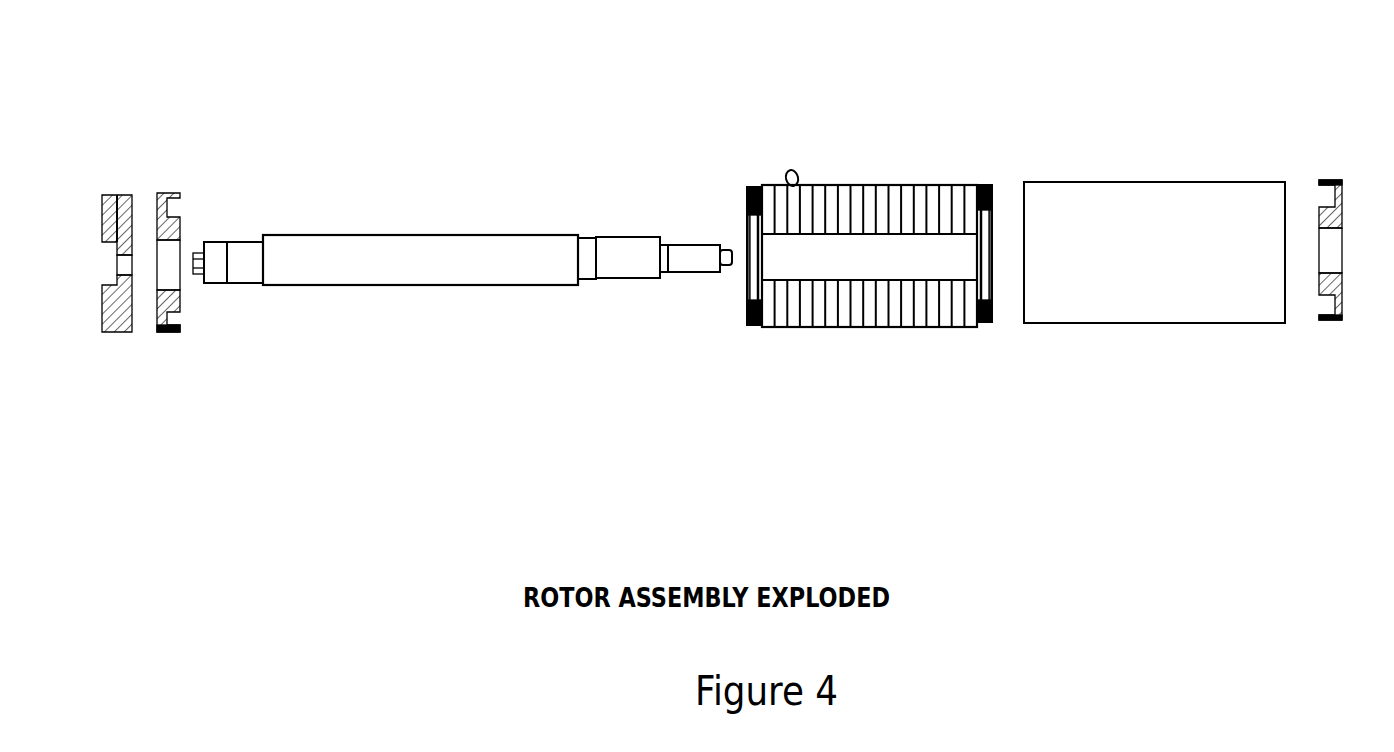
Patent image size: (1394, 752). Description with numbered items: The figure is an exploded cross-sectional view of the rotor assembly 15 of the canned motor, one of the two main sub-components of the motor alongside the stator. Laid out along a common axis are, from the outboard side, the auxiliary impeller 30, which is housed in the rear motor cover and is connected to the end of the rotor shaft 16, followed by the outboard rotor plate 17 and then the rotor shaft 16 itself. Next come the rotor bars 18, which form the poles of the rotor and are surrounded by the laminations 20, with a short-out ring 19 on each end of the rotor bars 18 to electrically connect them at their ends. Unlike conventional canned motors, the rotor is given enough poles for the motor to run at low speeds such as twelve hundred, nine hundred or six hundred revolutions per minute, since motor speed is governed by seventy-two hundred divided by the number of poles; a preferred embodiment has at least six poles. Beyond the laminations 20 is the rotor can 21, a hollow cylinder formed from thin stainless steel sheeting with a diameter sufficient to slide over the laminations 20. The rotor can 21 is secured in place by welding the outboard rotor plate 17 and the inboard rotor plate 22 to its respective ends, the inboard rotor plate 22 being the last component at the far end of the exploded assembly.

The rotor assembly 15 is at (892, 220).
The rotor shaft 16 is at (490, 235).
The outboard rotor plate 17 is at (162, 192).
The rotor bars 18 is at (983, 185).
The short-out rings 19 is at (748, 195).
The laminations 20 is at (778, 183).
The rotor can 21 is at (1127, 180).
The inboard rotor plate 22 is at (1333, 178).
The auxiliary impeller 30 is at (122, 190).